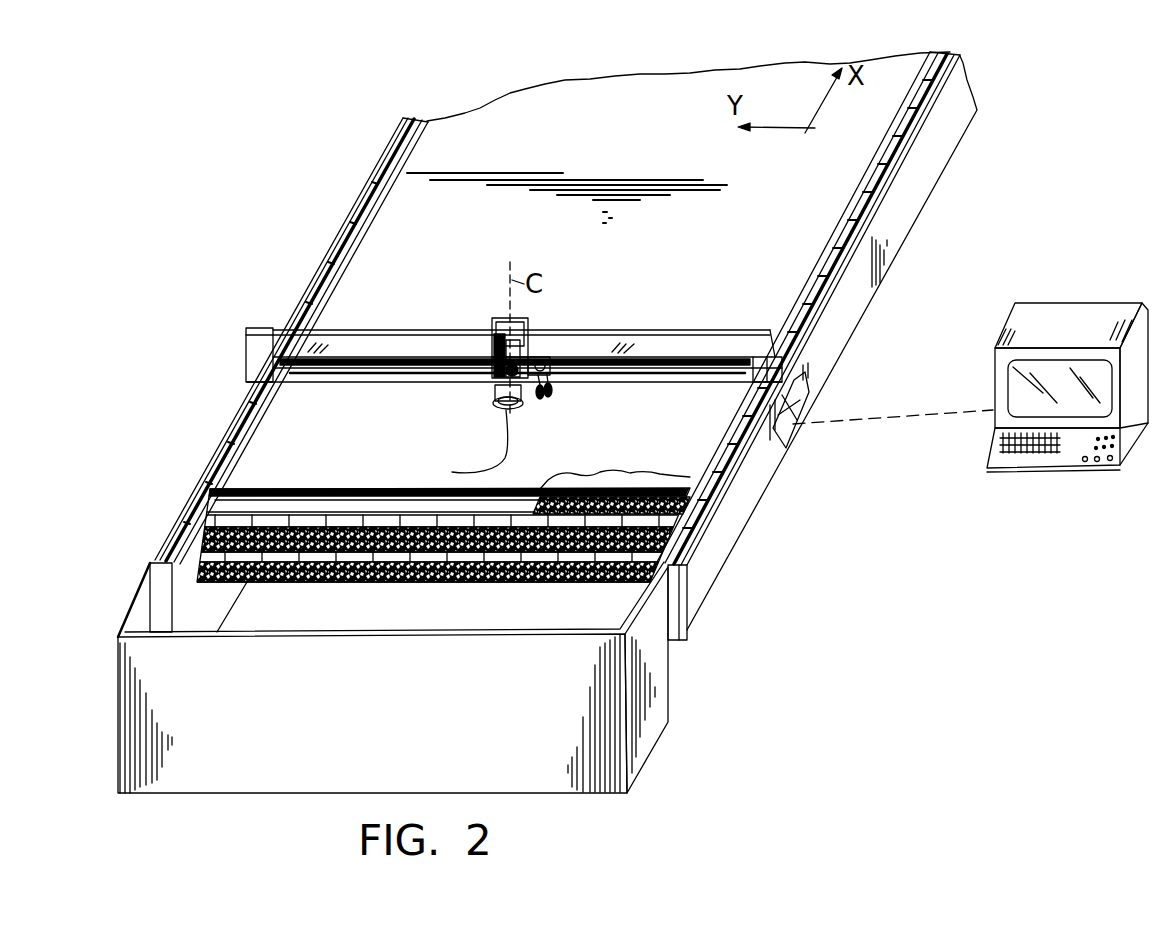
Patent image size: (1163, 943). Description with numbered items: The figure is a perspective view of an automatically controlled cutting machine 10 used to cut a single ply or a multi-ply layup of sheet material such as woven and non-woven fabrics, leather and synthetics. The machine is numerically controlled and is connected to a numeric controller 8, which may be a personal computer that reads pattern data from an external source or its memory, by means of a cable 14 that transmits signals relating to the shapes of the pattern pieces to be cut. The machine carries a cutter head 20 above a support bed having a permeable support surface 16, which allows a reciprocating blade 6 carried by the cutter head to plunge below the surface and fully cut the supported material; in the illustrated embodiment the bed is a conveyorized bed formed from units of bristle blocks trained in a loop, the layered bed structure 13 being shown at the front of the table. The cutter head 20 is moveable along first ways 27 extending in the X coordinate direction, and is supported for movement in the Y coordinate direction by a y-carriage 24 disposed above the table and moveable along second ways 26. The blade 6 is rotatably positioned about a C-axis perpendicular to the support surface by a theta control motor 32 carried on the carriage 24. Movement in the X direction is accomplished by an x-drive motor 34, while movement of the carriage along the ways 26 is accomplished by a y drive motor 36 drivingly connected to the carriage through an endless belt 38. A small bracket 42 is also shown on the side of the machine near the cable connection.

The cutting machine 10 is at (318, 238).
The first ways 27 is at (382, 167).
The y drive motor 36 is at (265, 328).
The x-drive motor 34 is at (770, 355).
The second ways 26 is at (385, 360).
The endless belt 38 is at (437, 370).
The cutter head 20 is at (479, 313).
The theta control motor 32 is at (487, 343).
The y-carriage 24 is at (532, 327).
The reciprocating blade 6 is at (493, 407).
The support bed 13 is at (343, 589).
The permeable support surface 16 is at (637, 487).
The sensor 42 is at (793, 427).
The cable 14 is at (940, 410).
The numeric controller 8 is at (1068, 316).